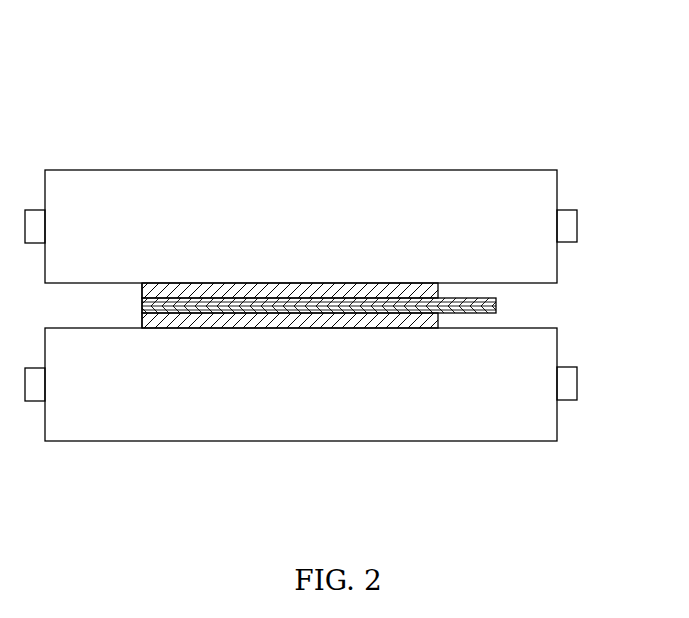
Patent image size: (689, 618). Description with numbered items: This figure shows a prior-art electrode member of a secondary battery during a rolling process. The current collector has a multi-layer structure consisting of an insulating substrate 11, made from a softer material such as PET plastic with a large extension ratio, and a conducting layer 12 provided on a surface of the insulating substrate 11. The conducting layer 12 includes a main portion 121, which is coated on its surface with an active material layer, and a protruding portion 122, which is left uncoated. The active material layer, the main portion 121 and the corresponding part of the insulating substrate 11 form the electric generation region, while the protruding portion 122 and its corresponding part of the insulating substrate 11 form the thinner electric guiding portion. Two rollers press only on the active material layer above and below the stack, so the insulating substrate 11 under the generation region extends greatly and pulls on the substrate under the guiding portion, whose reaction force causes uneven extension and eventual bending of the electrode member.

The insulating substrate 11 is at (142, 303).
The conducting layer 12 is at (320, 253).
The main portion 121 is at (366, 300).
The protruding portion 122 is at (375, 235).